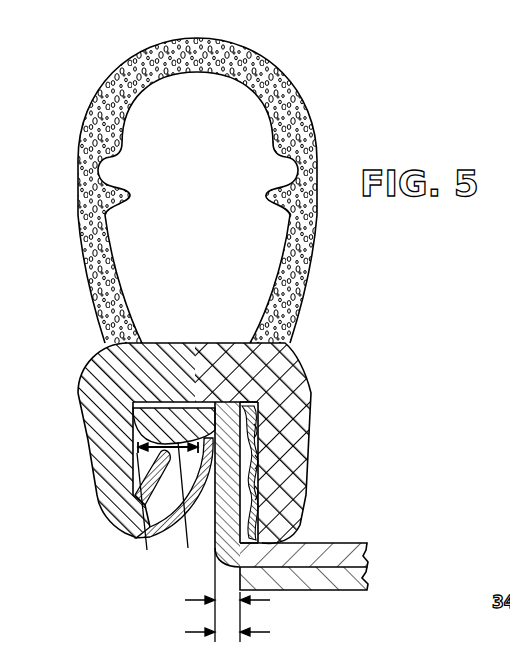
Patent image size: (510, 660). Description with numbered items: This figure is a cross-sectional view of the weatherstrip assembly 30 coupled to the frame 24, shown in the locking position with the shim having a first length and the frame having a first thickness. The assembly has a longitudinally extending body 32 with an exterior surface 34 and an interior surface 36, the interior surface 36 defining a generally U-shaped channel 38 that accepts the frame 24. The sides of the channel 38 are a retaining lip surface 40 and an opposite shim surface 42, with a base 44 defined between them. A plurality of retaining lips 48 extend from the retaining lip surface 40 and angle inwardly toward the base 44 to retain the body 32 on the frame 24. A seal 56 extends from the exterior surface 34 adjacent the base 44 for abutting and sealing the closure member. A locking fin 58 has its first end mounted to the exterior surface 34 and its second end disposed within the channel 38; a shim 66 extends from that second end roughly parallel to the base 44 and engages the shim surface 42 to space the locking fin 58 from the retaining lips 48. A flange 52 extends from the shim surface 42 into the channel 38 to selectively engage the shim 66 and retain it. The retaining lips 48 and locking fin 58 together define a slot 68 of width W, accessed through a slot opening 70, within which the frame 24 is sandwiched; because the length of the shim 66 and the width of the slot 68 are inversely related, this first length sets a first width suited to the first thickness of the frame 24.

The weatherstrip assembly 30 is at (283, 63).
The seal 56 is at (288, 118).
The exterior surface 34 is at (147, 420).
The shim 66 is at (102, 365).
The interior surface 36 is at (150, 402).
The channel 38 is at (183, 402).
The base 44 is at (227, 400).
The retaining lip surface 40 is at (262, 403).
The retaining lips 48 is at (258, 490).
The slot 68 is at (252, 522).
The slot opening 70 is at (250, 546).
The frame 24 is at (323, 588).
The body 32 is at (134, 456).
The shim surface 42 is at (134, 448).
The flange 52 is at (100, 515).
The locking fin 58 is at (140, 538).